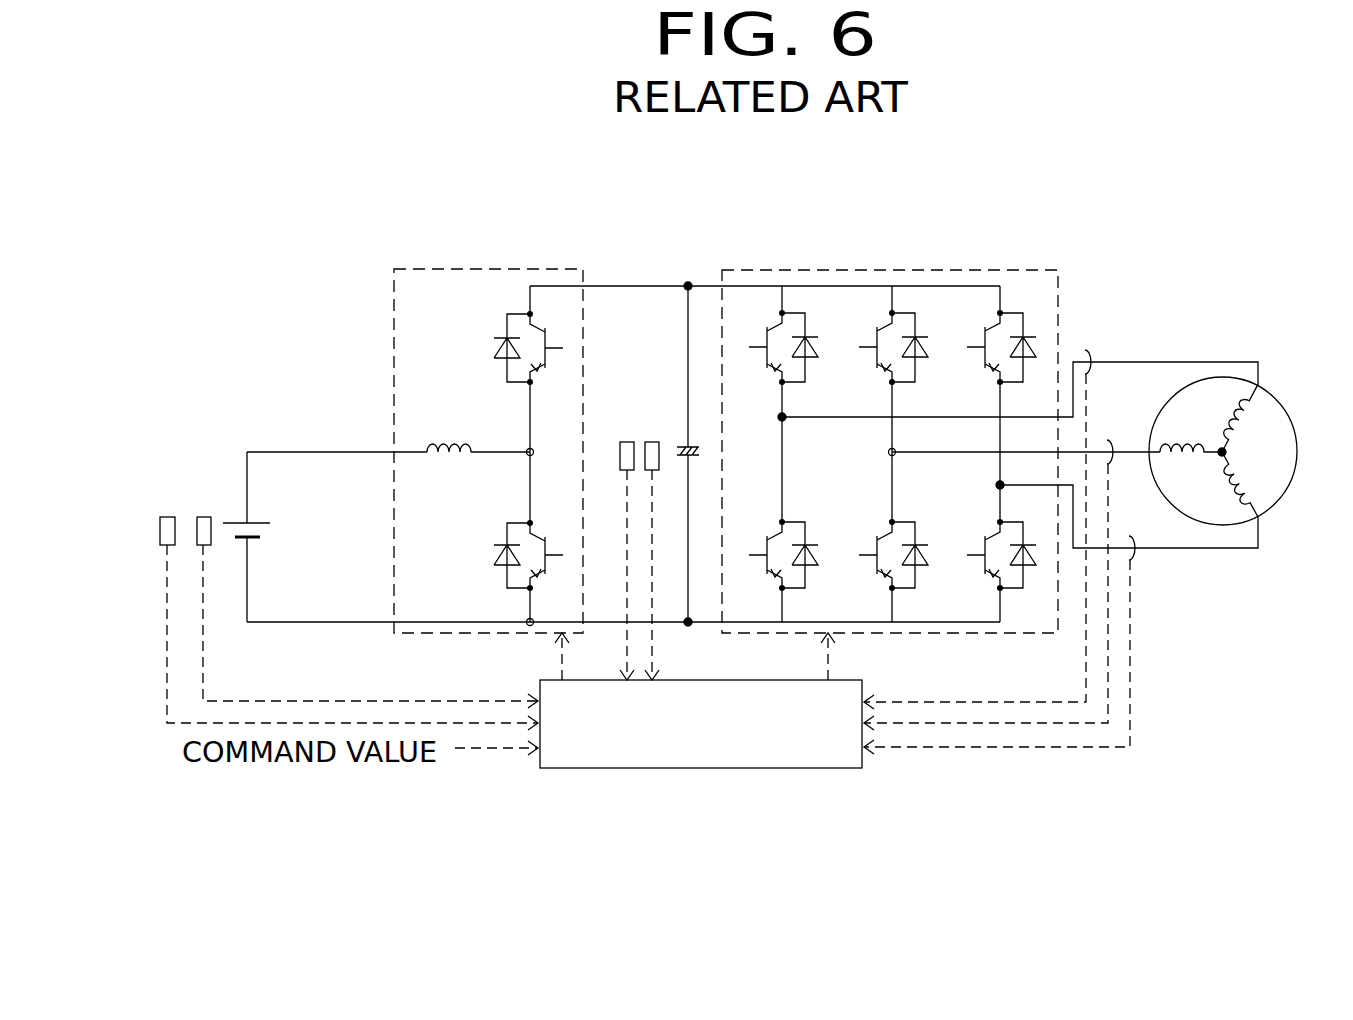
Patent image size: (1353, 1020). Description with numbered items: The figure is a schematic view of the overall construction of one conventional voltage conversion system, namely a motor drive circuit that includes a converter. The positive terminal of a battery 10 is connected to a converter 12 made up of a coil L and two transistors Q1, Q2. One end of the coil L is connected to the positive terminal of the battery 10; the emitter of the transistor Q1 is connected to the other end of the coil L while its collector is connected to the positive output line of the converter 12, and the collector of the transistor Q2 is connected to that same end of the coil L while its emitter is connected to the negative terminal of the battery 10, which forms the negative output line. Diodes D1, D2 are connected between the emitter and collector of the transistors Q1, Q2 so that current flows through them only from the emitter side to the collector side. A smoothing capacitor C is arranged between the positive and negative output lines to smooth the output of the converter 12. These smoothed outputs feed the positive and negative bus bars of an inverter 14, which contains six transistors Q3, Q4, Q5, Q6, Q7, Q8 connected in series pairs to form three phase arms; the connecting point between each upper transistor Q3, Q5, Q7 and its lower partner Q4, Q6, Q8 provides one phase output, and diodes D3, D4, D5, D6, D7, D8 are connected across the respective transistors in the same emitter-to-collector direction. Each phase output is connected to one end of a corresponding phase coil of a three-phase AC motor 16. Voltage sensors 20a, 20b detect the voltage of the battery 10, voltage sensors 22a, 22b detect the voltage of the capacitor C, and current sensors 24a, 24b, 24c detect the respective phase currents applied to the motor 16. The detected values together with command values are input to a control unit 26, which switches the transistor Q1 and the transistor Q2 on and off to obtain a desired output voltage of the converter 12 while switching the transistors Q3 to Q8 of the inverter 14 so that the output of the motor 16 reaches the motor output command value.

The battery 10 is at (236, 522).
The converter 12 is at (505, 262).
The inverter 14 is at (935, 265).
The three-phase AC motor 16 is at (1273, 405).
The voltage sensor 20a is at (165, 517).
The voltage sensor 20b is at (203, 517).
The voltage sensor 22a is at (627, 442).
The voltage sensor 22b is at (652, 442).
The current sensor 24a is at (1100, 355).
The current sensor 24b is at (1110, 446).
The current sensor 24c is at (1140, 560).
The control unit 26 is at (723, 768).
The coil L is at (449, 424).
The smoothing capacitor C is at (701, 445).
The transistor Q1 is at (556, 337).
The transistor Q2 is at (556, 535).
The transistor Q3 is at (756, 336).
The transistor Q4 is at (756, 546).
The transistor Q5 is at (865, 336).
The transistor Q6 is at (865, 546).
The transistor Q7 is at (975, 336).
The transistor Q8 is at (975, 546).
The diode D1 is at (487, 348).
The diode D2 is at (484, 555).
The diode D3 is at (820, 359).
The diode D4 is at (820, 567).
The diode D5 is at (931, 359).
The diode D6 is at (931, 567).
The diode D7 is at (1027, 367).
The diode D8 is at (1027, 573).